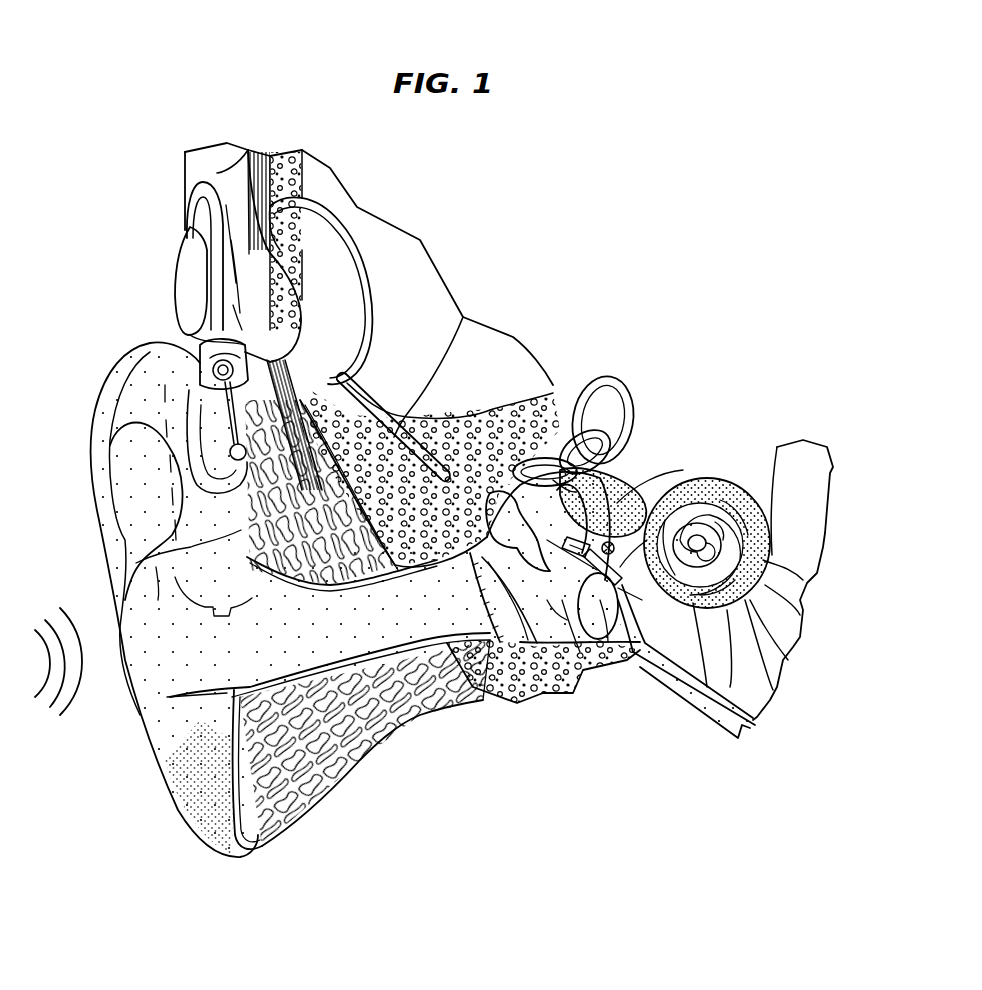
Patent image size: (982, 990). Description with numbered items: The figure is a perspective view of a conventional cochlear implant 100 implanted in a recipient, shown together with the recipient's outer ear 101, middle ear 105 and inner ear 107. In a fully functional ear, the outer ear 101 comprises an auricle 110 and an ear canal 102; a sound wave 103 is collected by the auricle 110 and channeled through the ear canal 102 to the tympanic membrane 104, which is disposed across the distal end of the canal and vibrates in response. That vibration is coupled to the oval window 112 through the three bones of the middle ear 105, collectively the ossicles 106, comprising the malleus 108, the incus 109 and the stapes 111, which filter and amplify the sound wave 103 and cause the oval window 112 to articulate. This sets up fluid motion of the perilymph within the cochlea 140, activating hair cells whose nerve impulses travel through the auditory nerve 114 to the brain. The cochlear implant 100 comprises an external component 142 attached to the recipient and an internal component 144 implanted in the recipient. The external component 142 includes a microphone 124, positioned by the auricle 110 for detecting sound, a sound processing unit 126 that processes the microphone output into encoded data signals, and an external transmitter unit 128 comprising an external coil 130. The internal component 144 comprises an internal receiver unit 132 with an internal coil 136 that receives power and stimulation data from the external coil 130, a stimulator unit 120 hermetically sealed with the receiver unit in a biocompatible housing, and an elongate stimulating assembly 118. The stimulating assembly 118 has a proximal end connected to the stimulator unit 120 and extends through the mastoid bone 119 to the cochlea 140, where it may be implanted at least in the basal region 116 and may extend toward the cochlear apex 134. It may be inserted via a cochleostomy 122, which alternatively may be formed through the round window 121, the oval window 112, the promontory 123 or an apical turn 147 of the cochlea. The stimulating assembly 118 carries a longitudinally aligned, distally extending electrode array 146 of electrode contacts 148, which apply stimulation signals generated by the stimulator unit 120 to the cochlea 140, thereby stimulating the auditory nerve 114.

The cochlear implant 100 is at (106, 207).
The outer ear 101 is at (213, 880).
The ear canal 102 is at (350, 620).
The sound wave 103 is at (70, 623).
The tympanic membrane 104 is at (497, 610).
The middle ear 105 is at (541, 756).
The ossicles 106 is at (551, 632).
The inner ear 107 is at (746, 787).
The malleus 108 is at (594, 392).
The incus 109 is at (543, 473).
The auricle 110 is at (173, 786).
The stapes 111 is at (567, 537).
The oval window 112 is at (708, 462).
The auditory nerve 114 is at (805, 450).
The basal region 116 is at (700, 590).
The elongate stimulating assembly 118 is at (463, 317).
The mastoid bone 119 is at (527, 410).
The stimulator unit 120 is at (302, 307).
The round window 121 is at (648, 620).
The cochleostomy 122 is at (608, 642).
The promontory 123 is at (580, 652).
The microphone 124 is at (172, 348).
The sound processing unit 126 is at (190, 330).
The external transmitter unit 128 is at (183, 268).
The external coil 130 is at (190, 197).
The internal receiver unit 132 is at (267, 262).
The cochlear apex 134 is at (788, 660).
The internal coil 136 is at (232, 197).
The cochlea 140 is at (800, 615).
The external component 142 is at (167, 112).
The internal component 144 is at (306, 108).
The electrode array 146 is at (760, 505).
The apical turn 147 is at (737, 598).
The electrode contacts 148 is at (803, 580).